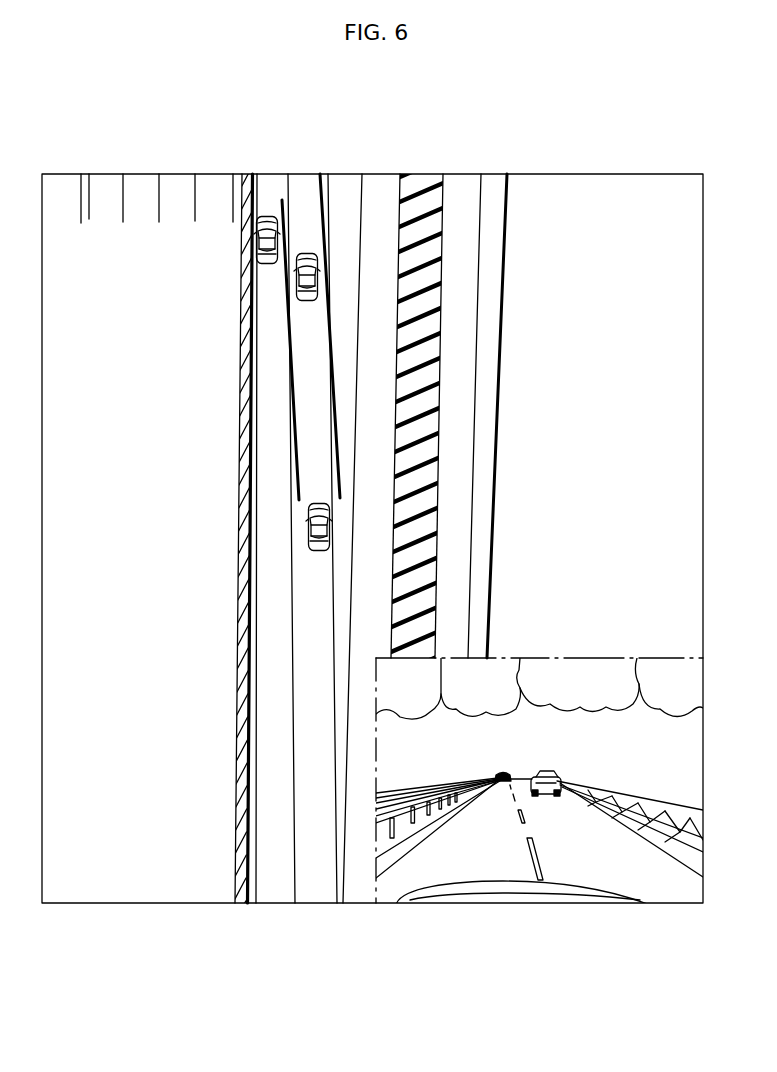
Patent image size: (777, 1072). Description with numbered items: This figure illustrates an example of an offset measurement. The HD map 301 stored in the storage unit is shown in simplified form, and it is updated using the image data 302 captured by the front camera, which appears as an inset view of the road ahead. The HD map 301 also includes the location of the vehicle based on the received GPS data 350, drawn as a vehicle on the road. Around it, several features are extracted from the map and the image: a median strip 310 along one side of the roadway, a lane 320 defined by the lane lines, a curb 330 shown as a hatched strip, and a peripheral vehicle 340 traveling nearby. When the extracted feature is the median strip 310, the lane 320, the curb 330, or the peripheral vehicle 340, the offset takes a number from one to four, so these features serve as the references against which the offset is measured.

The HD map 301 is at (621, 174).
The image data 302 is at (574, 658).
The median strip 310 is at (240, 408).
The lane 320 is at (317, 897).
The curb 330 is at (442, 323).
The peripheral vehicle 340 is at (305, 252).
The GPS data 350 is at (290, 526).